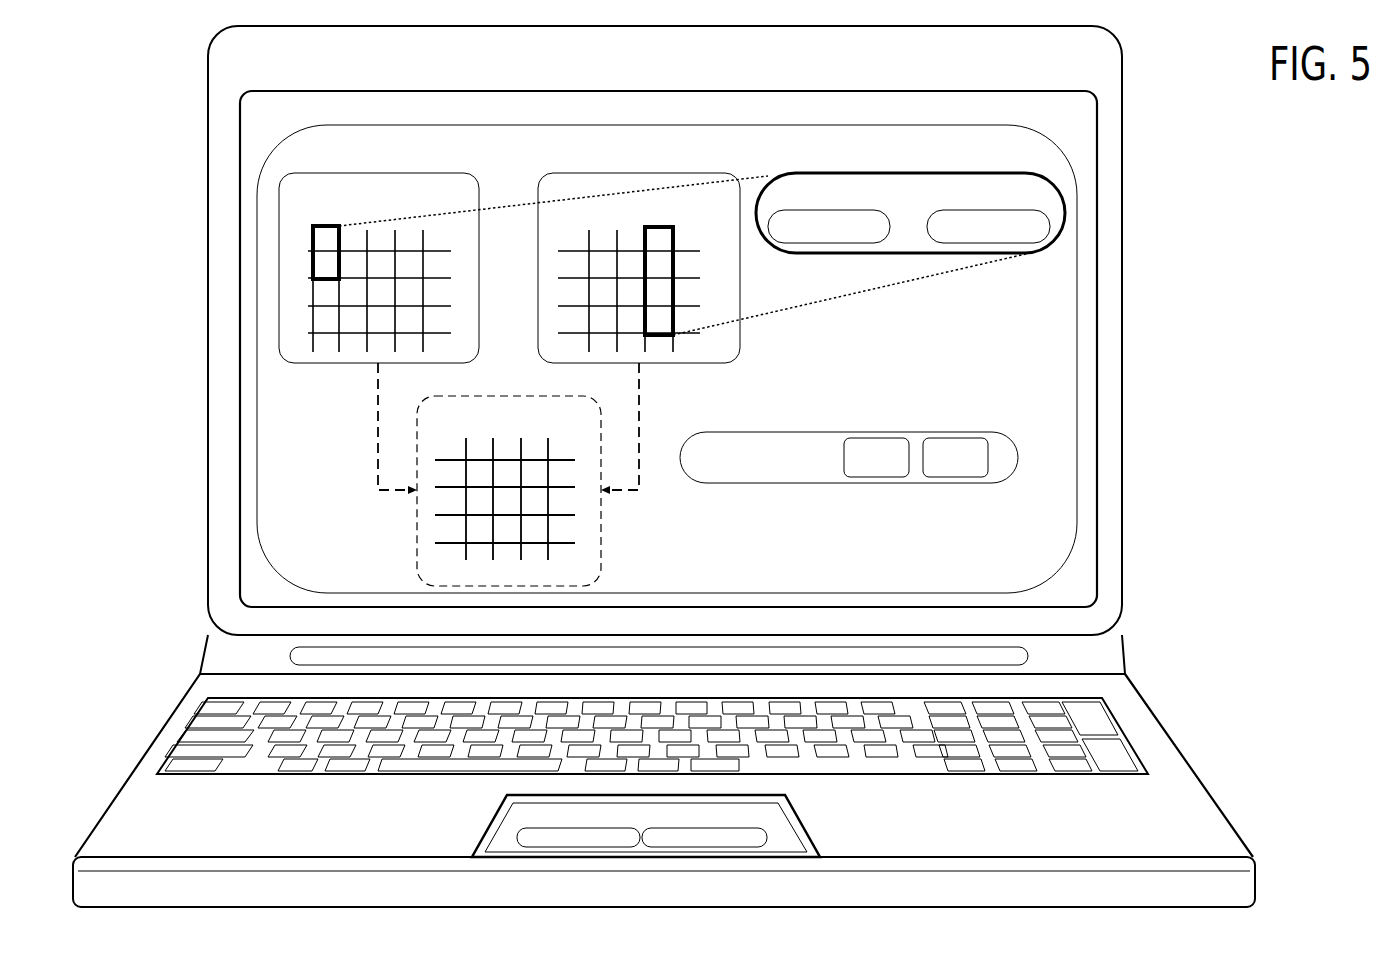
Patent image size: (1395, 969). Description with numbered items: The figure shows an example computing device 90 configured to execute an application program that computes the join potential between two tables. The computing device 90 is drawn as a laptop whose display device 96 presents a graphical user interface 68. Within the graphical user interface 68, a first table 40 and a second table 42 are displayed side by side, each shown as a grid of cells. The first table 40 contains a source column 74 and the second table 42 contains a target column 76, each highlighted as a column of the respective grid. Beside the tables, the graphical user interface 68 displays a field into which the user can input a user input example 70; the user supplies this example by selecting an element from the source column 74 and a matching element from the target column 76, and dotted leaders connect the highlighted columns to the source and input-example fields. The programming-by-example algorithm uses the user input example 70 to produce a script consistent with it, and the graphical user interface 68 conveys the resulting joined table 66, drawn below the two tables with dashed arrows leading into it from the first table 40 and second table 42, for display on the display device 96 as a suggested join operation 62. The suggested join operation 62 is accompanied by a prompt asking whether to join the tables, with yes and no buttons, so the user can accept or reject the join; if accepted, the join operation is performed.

The computing device 90 is at (1077, 77).
The display device 96 is at (1004, 120).
The graphical user interface 68 is at (989, 580).
The first table 40 is at (454, 167).
The second table 42 is at (724, 167).
The source column 74 is at (479, 212).
The target column 76 is at (740, 212).
The user input example 70 is at (1024, 168).
The joined table 66 is at (592, 390).
The suggested join operation 62 is at (1005, 425).